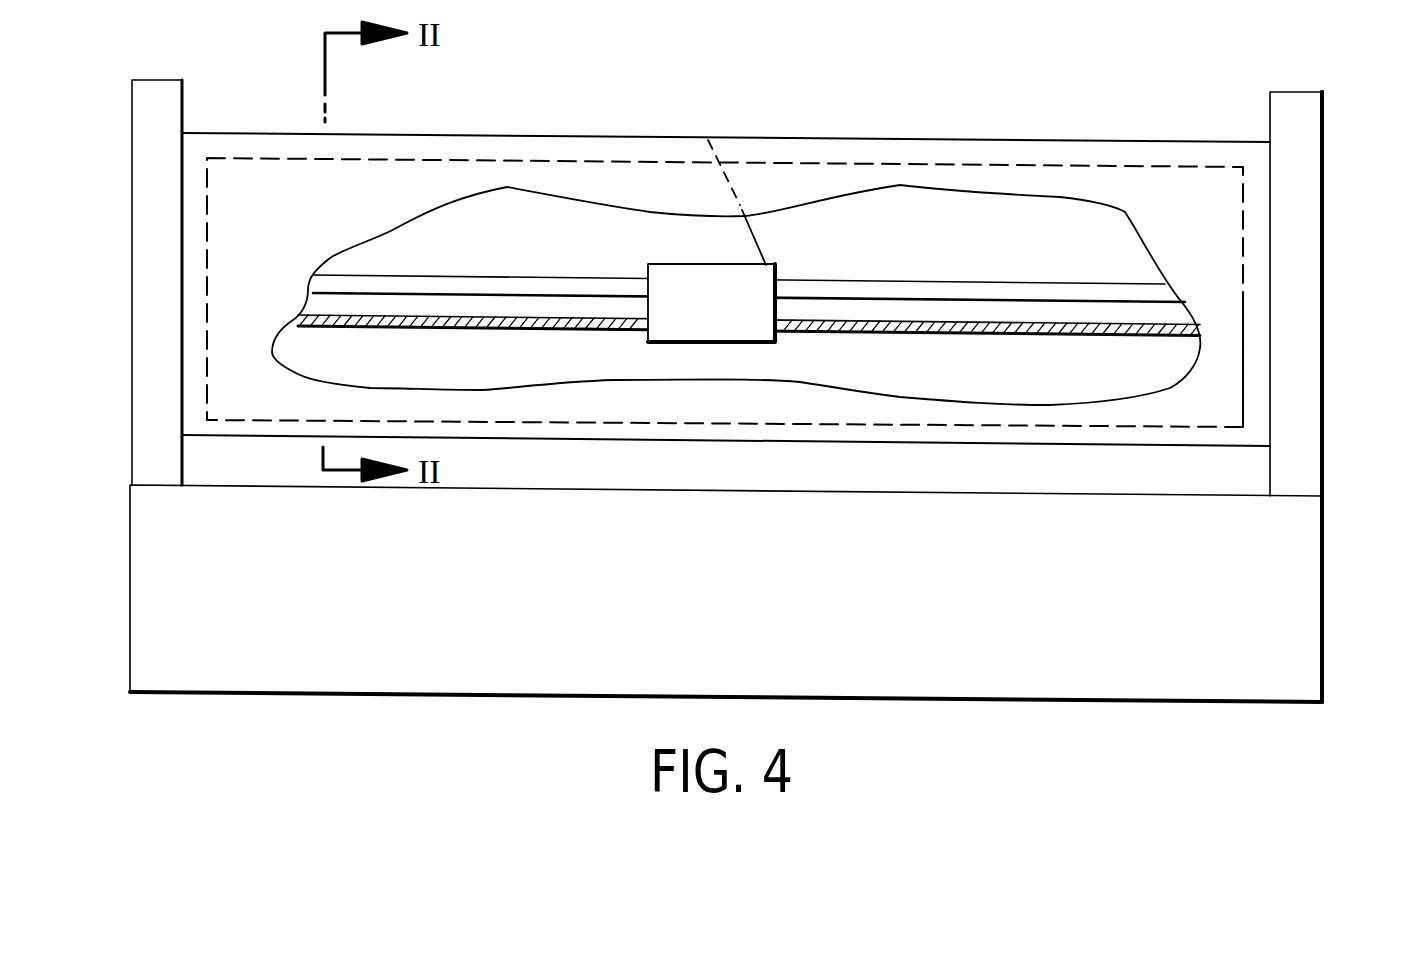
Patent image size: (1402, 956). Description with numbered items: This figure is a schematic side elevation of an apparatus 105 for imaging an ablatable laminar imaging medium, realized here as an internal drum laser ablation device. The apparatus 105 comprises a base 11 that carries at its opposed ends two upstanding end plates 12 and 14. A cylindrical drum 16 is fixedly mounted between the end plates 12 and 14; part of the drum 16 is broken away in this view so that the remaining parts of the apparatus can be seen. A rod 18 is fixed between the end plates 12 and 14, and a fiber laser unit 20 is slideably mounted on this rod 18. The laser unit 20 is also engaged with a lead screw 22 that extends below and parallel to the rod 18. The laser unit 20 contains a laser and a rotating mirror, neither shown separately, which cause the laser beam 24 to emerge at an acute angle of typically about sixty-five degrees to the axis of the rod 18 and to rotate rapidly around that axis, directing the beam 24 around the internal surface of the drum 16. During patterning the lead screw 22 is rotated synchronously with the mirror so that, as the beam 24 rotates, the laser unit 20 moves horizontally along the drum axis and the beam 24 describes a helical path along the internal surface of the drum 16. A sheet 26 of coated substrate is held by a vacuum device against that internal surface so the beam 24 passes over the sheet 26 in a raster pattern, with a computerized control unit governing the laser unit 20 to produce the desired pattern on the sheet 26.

The apparatus 105 is at (608, 78).
The base 11 is at (733, 576).
The end plate 12 is at (141, 208).
The end plate 14 is at (1307, 230).
The cylindrical drum 16 is at (996, 153).
The rod 18 is at (977, 292).
The fiber laser unit 20 is at (697, 315).
The lead screw 22 is at (968, 333).
The laser beam 24 is at (758, 244).
The sheet 26 is at (1245, 414).